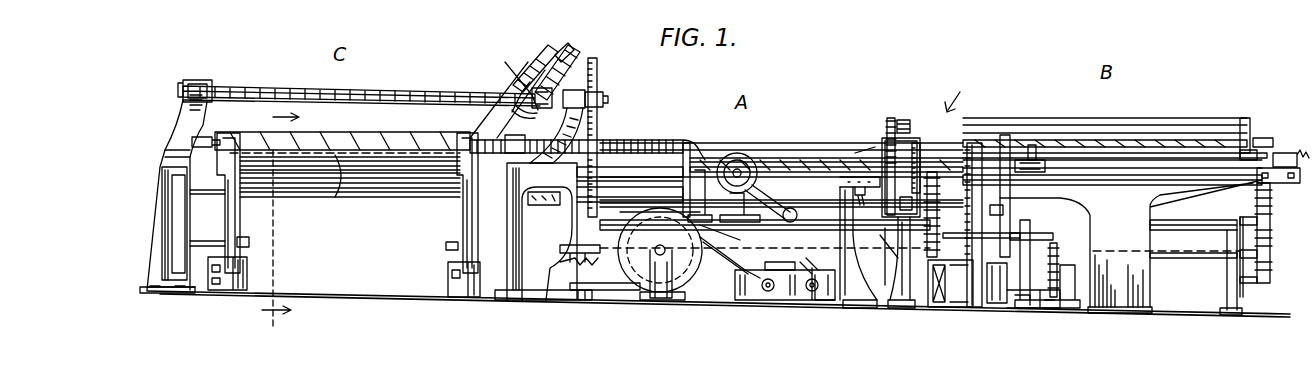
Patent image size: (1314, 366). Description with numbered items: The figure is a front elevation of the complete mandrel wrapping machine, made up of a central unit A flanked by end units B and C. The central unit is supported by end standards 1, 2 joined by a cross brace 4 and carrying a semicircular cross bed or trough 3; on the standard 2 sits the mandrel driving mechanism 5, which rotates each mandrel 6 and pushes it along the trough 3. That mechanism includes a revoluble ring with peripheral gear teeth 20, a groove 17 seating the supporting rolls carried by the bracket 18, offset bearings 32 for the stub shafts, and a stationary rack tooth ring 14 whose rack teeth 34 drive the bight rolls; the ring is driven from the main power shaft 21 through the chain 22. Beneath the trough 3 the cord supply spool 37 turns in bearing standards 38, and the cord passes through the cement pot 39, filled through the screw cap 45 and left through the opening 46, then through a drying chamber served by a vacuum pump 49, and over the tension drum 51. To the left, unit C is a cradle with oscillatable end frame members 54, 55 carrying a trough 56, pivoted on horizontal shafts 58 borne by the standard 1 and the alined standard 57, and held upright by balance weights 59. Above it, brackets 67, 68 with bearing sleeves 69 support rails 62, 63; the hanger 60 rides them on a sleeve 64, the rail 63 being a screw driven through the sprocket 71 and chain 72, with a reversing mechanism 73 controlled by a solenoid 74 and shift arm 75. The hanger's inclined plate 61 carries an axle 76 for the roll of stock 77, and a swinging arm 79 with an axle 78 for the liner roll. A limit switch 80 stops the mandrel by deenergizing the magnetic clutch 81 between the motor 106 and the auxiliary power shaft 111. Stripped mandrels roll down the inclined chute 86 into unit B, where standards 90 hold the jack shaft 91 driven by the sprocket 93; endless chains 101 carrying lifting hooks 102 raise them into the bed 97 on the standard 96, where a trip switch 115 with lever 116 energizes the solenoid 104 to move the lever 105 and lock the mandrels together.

The end standard 1 is at (533, 288).
The end standard 2 is at (840, 203).
The semicircular cross bed or trough 3 is at (793, 152).
The horizontal cross brace 4 is at (809, 265).
The mandrel driving mechanism 5 is at (617, 208).
The mandrel or mandrel section 6 is at (1084, 130).
The stationary rack tooth ring 14 is at (922, 133).
The groove 17 is at (870, 200).
The bracket 18 is at (862, 152).
The gear teeth 20 is at (893, 118).
The main power shaft 21 is at (900, 258).
The chain 22 is at (937, 187).
The offset bearings 32 is at (907, 125).
The rack teeth 34 is at (915, 132).
The supply spool 37 is at (703, 252).
The bearing standards 38 is at (685, 285).
The cement pot 39 is at (762, 295).
The screw cap 45 is at (786, 266).
The opening 46 is at (818, 280).
The vacuum pump 49 is at (617, 290).
The tension drum or roll 51 is at (745, 155).
The end frame member 54 is at (457, 220).
The end frame member 55 is at (240, 215).
The trough 56 is at (338, 190).
The standard 57 is at (190, 293).
The horizontal shafts 58 is at (249, 242).
The counter or balance weights 59 is at (247, 273).
The hanger 60 is at (578, 110).
The inclined plate 61 is at (565, 70).
The supporting rail 62 is at (375, 93).
The supporting rail 63 is at (420, 93).
The sleeve 64 is at (552, 95).
The bracket 67 is at (185, 120).
The bracket 68 is at (583, 133).
The bearing sleeves 69 is at (210, 86).
The sprocket 71 is at (597, 62).
The chain 72 is at (630, 184).
The reversing mechanism 73 is at (646, 192).
The solenoid 74 is at (578, 255).
The shift arm 75 is at (553, 205).
The axle 76 is at (497, 82).
The roll of stock 77 is at (512, 68).
The axle 78 is at (524, 60).
The swinging arm 79 is at (560, 55).
The limit switch 80 is at (203, 137).
The magnetic clutch 81 is at (1000, 303).
The inclined chute 86 is at (795, 203).
The standards 90 is at (1053, 237).
The jack shaft 91 is at (1198, 258).
The sprocket 93 is at (1058, 266).
The standard 96 is at (1131, 246).
The bed or trough 97 is at (1112, 169).
The endless chains 101 is at (1270, 240).
The mandrel lifting hooks 102 is at (1252, 142).
The solenoid 104 is at (1282, 174).
The lever 105 is at (1240, 155).
The motor 106 is at (950, 283).
The auxiliary power shaft 111 is at (1062, 300).
The spring pressed trip switch 115 is at (1030, 165).
The lever 116 is at (1036, 156).